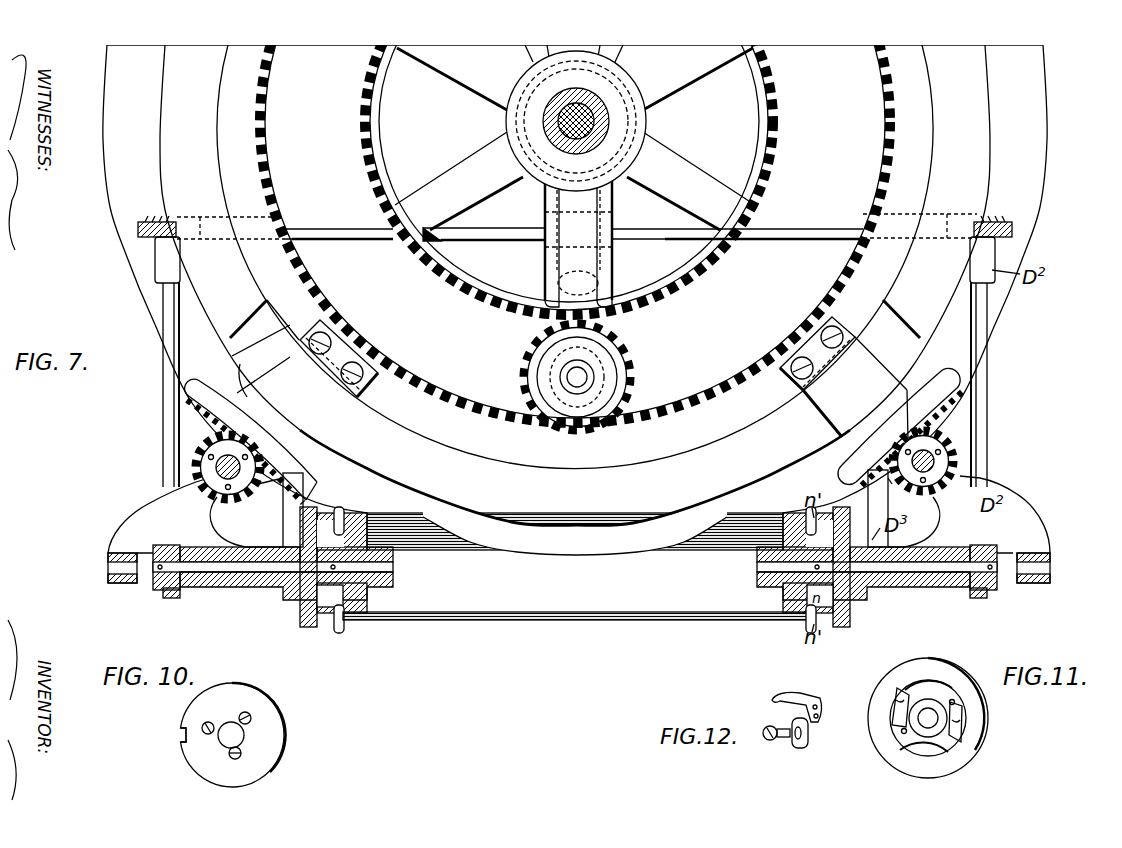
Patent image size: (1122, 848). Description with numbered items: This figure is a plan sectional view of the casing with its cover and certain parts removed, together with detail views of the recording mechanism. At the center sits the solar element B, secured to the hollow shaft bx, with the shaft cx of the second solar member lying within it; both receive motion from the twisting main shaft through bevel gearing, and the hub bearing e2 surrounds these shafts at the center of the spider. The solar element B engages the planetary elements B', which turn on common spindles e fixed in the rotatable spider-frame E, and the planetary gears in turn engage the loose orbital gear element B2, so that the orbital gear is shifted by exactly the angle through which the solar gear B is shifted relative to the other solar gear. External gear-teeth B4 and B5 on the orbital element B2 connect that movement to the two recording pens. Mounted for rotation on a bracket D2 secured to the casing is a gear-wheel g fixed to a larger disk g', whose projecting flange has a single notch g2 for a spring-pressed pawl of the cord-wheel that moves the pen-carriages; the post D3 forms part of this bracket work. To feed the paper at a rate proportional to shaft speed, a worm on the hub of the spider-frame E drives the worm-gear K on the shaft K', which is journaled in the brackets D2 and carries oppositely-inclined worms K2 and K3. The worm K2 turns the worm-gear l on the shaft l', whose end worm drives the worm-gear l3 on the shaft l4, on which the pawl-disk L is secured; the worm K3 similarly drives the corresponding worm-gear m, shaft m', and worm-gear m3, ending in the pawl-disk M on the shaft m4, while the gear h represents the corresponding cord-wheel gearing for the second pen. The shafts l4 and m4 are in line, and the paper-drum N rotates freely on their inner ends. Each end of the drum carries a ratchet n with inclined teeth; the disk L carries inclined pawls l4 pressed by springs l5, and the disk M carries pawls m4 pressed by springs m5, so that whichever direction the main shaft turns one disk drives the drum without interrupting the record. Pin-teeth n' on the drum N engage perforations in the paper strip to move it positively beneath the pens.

In FIG. 7, the solar element B is at (551, 173).
In FIG. 7, the planetary elements B' is at (559, 377).
In FIG. 7, the orbital gear element B2 is at (575, 230).
In FIG. 7, the external gear-teeth B4 is at (258, 424).
In FIG. 7, the external gear-teeth B5 is at (890, 426).
In FIG. 7, the hollow shaft bx is at (560, 123).
In FIG. 7, the shaft cx is at (592, 123).
In FIG. 7, the spindles e is at (578, 375).
In FIG. 7, the hub bearing e2 is at (528, 166).
In FIG. 7, the spider-frame E is at (542, 272).
In FIG. 7, the worm-gear K is at (575, 137).
In FIG. 7, the shaft K' is at (577, 223).
In FIG. 7, the worm K2 is at (158, 221).
In FIG. 7, the worm K3 is at (996, 212).
In FIG. 7, the worm-gear l is at (155, 260).
In FIG. 7, the shaft l' is at (161, 385).
In FIG. 7, the worm-gear l3 is at (163, 598).
In FIG. 7, the shaft / pawls l4 is at (273, 573).
In FIG. 11, the shaft / pawls l4 is at (897, 703).
In FIG. 12, the shaft / pawls l4 is at (809, 740).
In FIG. 7, the springs l5 is at (301, 612).
In FIG. 11, the springs l5 is at (950, 704).
In FIG. 12, the springs l5 is at (808, 698).
In FIG. 7, the pawl-disk L is at (312, 630).
In FIG. 11, the pawl-disk L is at (928, 718).
In FIG. 7, the worm-gear m is at (1017, 248).
In FIG. 7, the shaft m' is at (1000, 385).
In FIG. 7, the worm-gear m3 is at (988, 600).
In FIG. 7, the shaft / pawls m4 is at (877, 573).
In FIG. 7, the springs m5 is at (855, 600).
In FIG. 7, the pawl-disk M is at (840, 628).
In FIG. 7, the paper-drum N is at (588, 622).
In FIG. 7, the ratchet n is at (330, 596).
In FIG. 7, the pin-teeth n' is at (352, 568).
In FIG. 7, the bracket D2 is at (243, 441).
In FIG. 7, the bracket post D3 is at (284, 540).
In FIG. 7, the gear-wheel g is at (230, 480).
In FIG. 7, the pinion gear h is at (905, 488).
In FIG. 10, the disk g' is at (249, 735).
In FIG. 10, the notch g2 is at (181, 733).